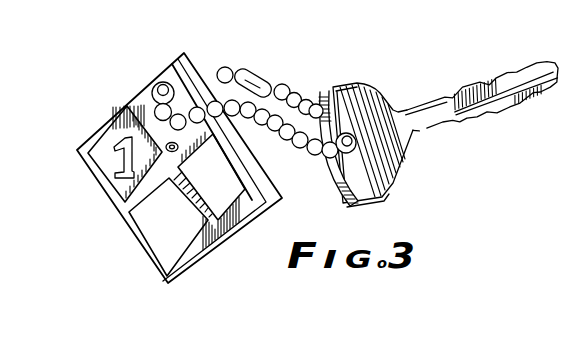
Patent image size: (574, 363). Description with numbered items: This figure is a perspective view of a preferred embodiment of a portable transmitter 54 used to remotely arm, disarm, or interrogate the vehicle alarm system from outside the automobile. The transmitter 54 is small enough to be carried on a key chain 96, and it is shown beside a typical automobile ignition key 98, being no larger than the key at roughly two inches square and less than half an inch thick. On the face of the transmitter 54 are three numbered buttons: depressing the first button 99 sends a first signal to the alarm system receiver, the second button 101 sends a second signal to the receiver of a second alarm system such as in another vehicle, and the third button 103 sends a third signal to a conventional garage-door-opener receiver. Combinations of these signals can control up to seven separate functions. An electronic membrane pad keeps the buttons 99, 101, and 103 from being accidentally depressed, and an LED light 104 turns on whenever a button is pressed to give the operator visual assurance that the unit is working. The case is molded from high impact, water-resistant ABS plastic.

The portable transmitter 54 is at (189, 309).
The key chain 96 is at (258, 72).
The automobile ignition key 98 is at (421, 138).
The "1" button 99 is at (110, 163).
The "2" button 101 is at (147, 220).
The "3" button 103 is at (220, 216).
The LED light 104 is at (125, 103).